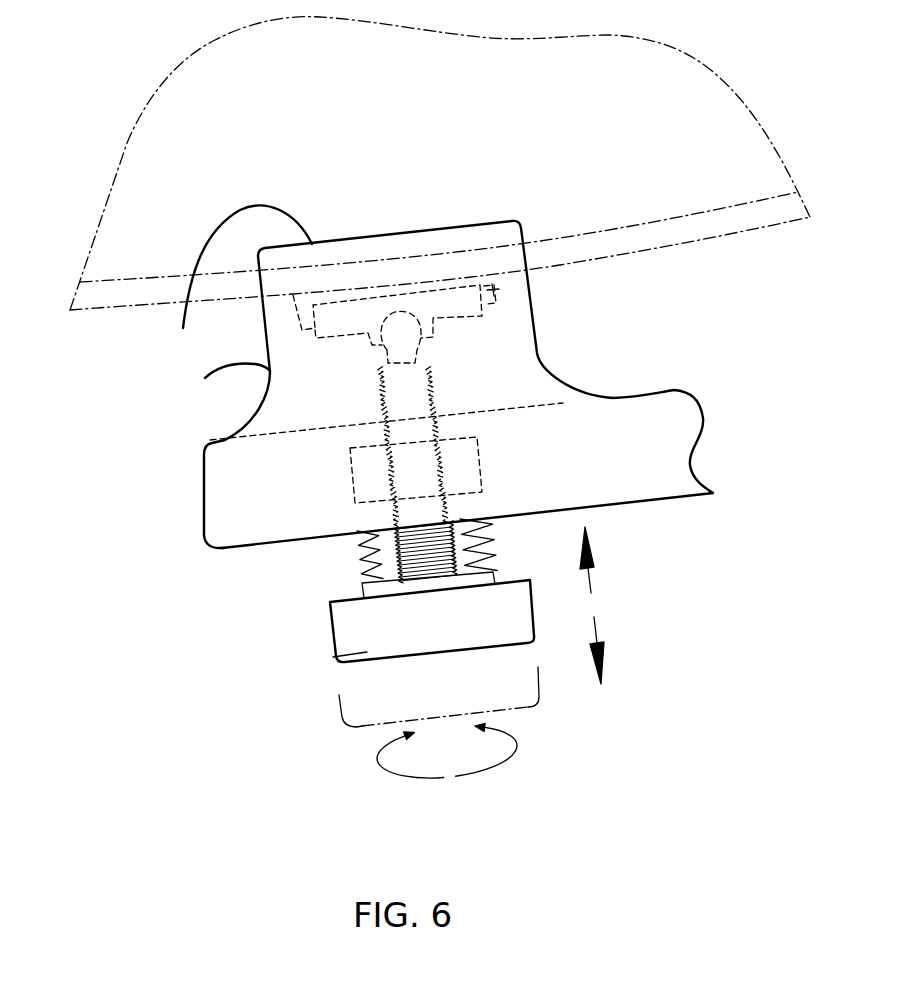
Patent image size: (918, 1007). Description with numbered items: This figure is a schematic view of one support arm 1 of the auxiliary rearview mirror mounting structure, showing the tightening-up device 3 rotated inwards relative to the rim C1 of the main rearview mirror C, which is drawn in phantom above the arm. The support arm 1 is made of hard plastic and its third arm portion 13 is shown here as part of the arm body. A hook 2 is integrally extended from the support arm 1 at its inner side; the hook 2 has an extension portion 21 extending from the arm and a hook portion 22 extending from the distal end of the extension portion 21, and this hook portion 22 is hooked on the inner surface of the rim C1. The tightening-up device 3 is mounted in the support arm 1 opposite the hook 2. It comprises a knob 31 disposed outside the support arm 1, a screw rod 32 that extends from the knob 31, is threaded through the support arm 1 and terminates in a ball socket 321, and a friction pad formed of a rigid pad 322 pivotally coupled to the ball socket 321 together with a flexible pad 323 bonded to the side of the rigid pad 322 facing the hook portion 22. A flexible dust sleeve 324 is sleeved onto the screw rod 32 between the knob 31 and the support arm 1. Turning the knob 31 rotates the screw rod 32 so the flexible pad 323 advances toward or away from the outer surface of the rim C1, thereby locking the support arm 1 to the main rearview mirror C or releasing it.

The support arm 1 is at (675, 503).
The third arm portion 13 is at (233, 502).
The hook 2 is at (178, 315).
The extension portion 21 is at (205, 378).
The hook portion 22 is at (185, 326).
The tightening-up device 3 is at (422, 602).
The knob 31 is at (337, 658).
The screw rod 32 is at (417, 563).
The ball socket 321 is at (406, 321).
The rigid pad 322 is at (343, 318).
The flexible pad 323 is at (493, 290).
The flexible dust sleeve 324 is at (367, 560).
The main rearview mirror C is at (708, 144).
The rim C1 is at (690, 232).